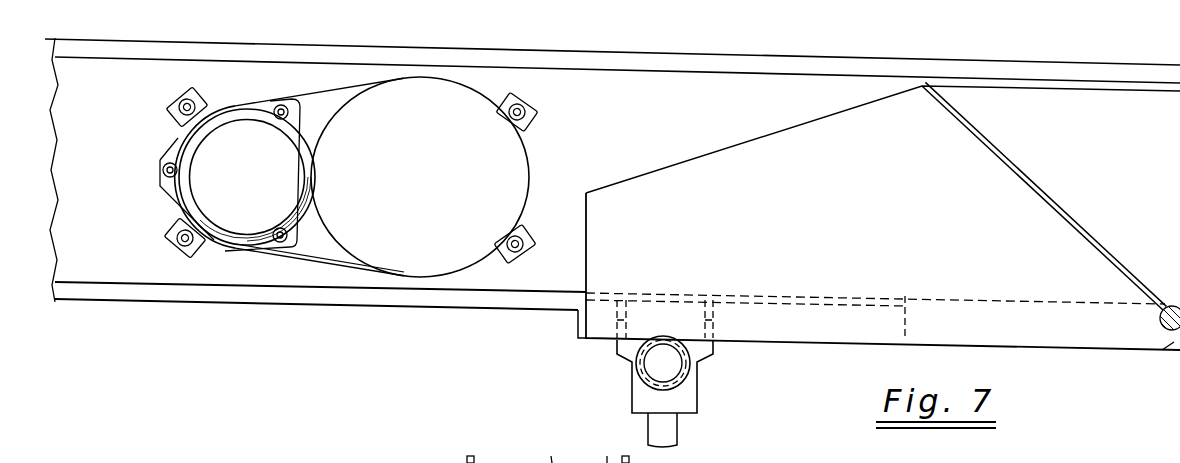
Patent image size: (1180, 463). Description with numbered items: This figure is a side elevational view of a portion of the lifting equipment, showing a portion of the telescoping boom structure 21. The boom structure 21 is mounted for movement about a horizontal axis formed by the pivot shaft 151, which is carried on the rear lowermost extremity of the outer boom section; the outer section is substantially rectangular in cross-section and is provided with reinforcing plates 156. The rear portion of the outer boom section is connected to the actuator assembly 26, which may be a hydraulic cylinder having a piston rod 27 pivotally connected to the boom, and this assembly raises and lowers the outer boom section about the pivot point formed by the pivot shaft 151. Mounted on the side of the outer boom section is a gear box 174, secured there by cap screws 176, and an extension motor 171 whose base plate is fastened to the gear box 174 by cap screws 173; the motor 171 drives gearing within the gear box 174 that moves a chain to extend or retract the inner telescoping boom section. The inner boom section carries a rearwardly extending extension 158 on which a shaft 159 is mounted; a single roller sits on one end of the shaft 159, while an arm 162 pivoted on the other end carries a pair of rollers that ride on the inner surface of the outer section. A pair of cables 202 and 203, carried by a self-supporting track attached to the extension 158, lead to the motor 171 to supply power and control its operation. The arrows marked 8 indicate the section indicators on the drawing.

The boom structure 21 is at (501, 44).
The section line 8- 8 is at (1179, 35).
The cap screws 176 is at (180, 94).
The cap screws 173 is at (166, 156).
The extension motor 171 is at (262, 200).
The gear box 174 is at (454, 204).
The reinforcing plates 156 is at (888, 237).
The pivot shaft 151 is at (1167, 350).
The actuator assembly 26 is at (710, 399).
The piston rod 27 is at (668, 425).
The arm 162 is at (492, 462).
The extension 158 is at (551, 462).
The shaft 159 is at (607, 462).
The cable 202 is at (527, 455).
The cable 203 is at (596, 455).